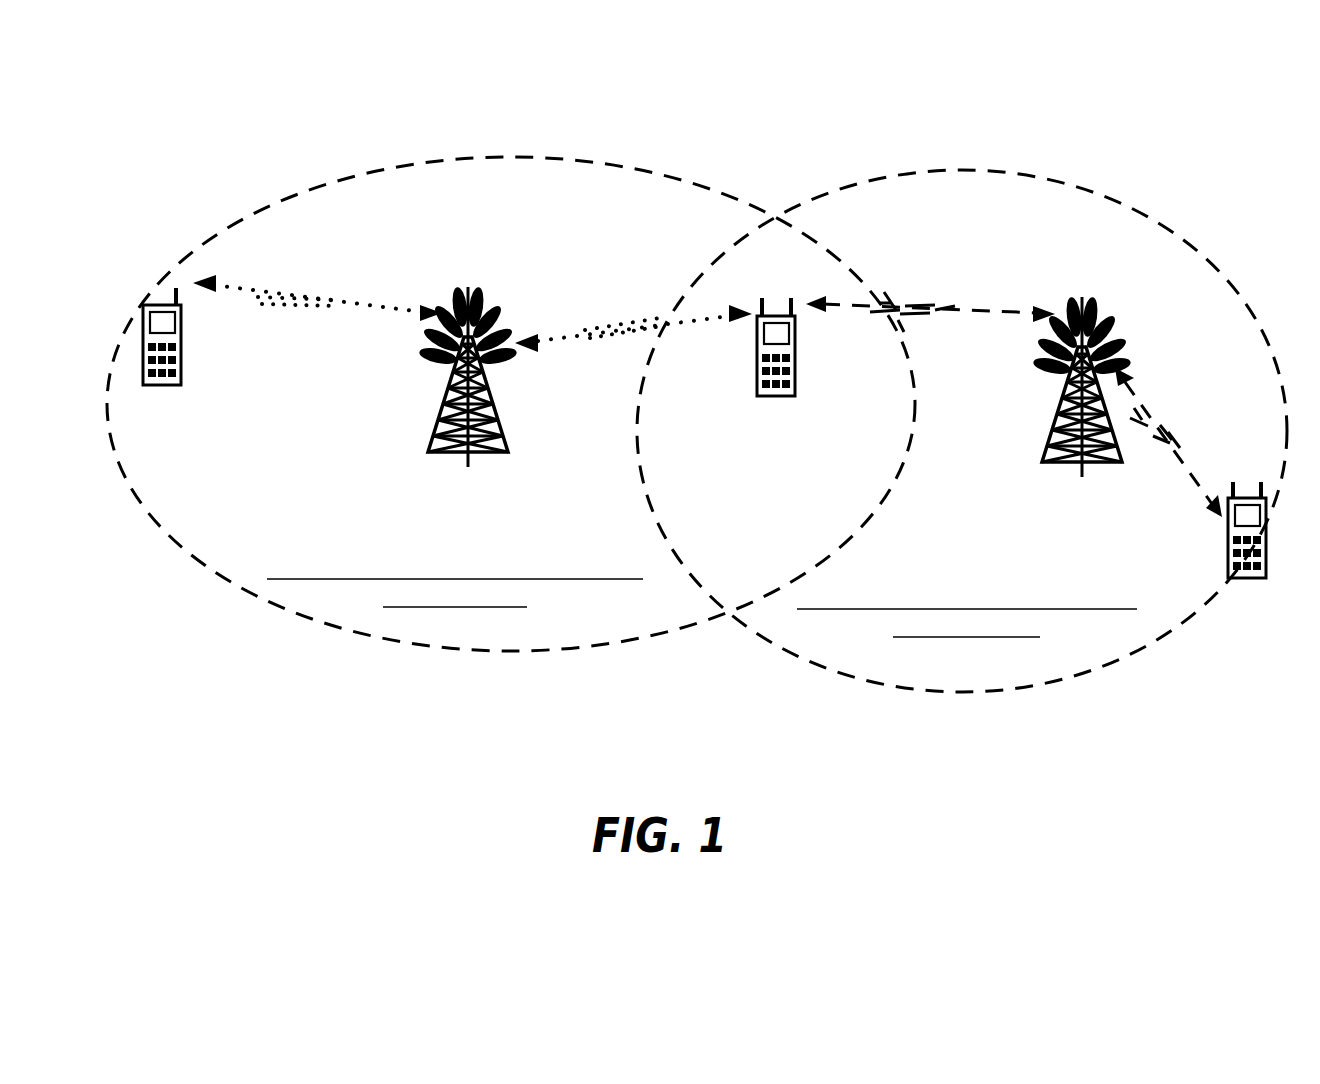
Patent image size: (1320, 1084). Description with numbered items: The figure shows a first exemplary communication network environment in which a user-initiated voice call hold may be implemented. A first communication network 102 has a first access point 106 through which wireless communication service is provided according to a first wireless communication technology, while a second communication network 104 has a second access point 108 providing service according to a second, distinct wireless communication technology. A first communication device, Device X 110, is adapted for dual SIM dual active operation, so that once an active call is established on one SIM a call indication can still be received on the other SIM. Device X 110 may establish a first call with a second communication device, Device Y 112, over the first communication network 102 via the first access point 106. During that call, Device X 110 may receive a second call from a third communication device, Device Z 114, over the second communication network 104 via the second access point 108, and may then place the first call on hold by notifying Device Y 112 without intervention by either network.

The first communication network 102 is at (962, 431).
The second communication network 104 is at (511, 404).
The first access point 106 is at (1090, 406).
The second access point 108 is at (435, 376).
The first communication device (Device X) 110 is at (803, 363).
The second communication device (Device Y) 112 is at (1216, 549).
The third communication device (Device Z) 114 is at (193, 356).